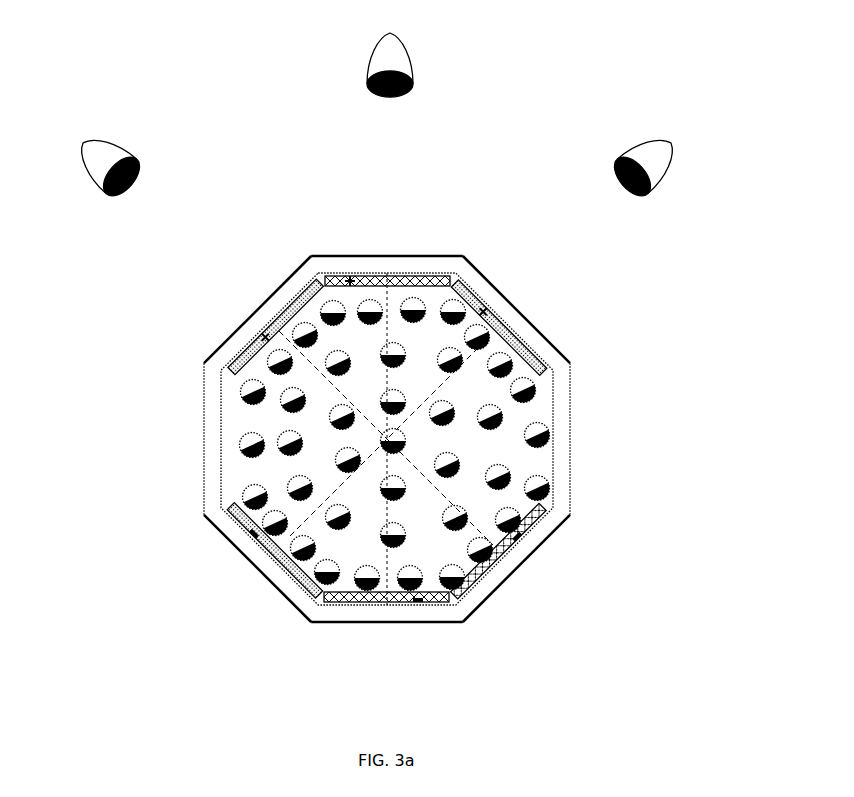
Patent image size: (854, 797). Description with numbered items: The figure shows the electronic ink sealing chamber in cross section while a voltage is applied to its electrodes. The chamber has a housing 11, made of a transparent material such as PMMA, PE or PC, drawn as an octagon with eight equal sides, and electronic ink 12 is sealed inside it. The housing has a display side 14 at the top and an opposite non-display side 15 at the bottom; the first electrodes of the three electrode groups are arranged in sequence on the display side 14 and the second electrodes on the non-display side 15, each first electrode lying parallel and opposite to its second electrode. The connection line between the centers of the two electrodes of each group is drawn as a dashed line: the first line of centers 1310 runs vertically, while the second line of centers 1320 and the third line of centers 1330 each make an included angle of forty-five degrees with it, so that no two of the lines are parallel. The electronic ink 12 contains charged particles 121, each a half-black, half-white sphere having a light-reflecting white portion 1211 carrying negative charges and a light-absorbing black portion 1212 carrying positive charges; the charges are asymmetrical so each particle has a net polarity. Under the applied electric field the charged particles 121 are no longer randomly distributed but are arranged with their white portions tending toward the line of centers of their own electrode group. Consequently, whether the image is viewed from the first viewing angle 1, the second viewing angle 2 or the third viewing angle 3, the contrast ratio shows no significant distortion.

The first viewing angle 1 is at (390, 51).
The second viewing angle 2 is at (100, 157).
The third viewing angle 3 is at (652, 157).
The housing 11 is at (567, 410).
The electronic ink 12 is at (540, 462).
The display side 14 is at (402, 256).
The non-display side 15 is at (405, 618).
The charged particle 121 is at (550, 487).
The white portion 1211 is at (243, 437).
The black portion 1212 is at (242, 448).
The first line of centers 1310 is at (370, 439).
The second line of centers 1320 is at (386, 438).
The third line of centers 1330 is at (387, 439).